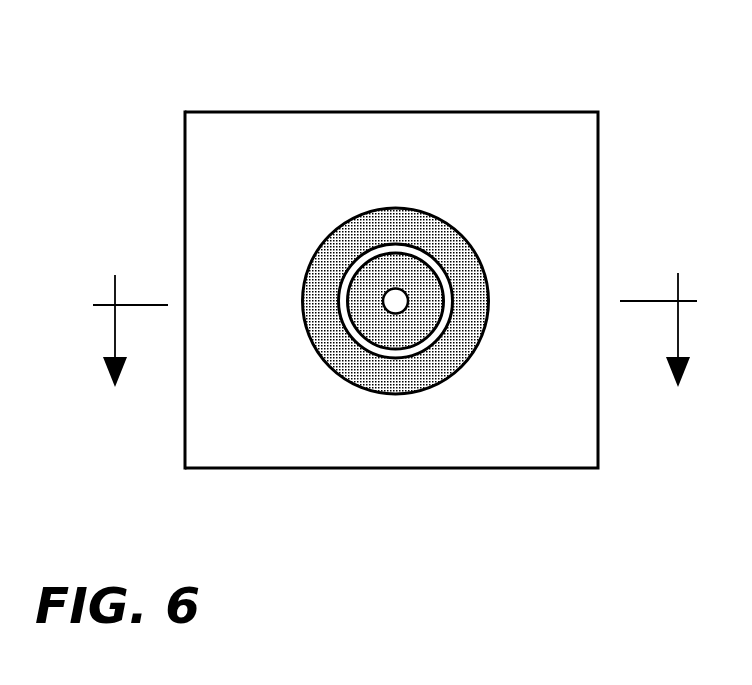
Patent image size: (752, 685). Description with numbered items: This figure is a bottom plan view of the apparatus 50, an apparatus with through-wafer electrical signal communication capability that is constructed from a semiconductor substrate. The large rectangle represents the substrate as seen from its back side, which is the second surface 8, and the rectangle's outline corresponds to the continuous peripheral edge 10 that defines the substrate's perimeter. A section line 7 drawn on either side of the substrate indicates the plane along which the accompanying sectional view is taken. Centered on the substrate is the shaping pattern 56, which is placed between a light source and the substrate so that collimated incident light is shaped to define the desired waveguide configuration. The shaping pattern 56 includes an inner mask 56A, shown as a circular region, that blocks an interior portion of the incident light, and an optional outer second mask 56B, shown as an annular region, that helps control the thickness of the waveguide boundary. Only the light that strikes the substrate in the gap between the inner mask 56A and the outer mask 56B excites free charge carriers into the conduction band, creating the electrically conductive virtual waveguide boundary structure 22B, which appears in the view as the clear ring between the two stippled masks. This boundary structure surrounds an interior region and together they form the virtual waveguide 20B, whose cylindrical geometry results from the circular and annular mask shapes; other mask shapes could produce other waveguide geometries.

The apparatus 50 is at (398, 278).
The continuous peripheral edge 10 is at (427, 470).
The second surface 8 is at (195, 182).
The section line 7- 7 is at (400, 327).
The shaping pattern 56 is at (459, 281).
The inner mask 56A is at (370, 282).
The second mask 56B is at (460, 253).
The virtual waveguide 20B is at (371, 374).
The virtual waveguide boundary structure 22B is at (437, 333).